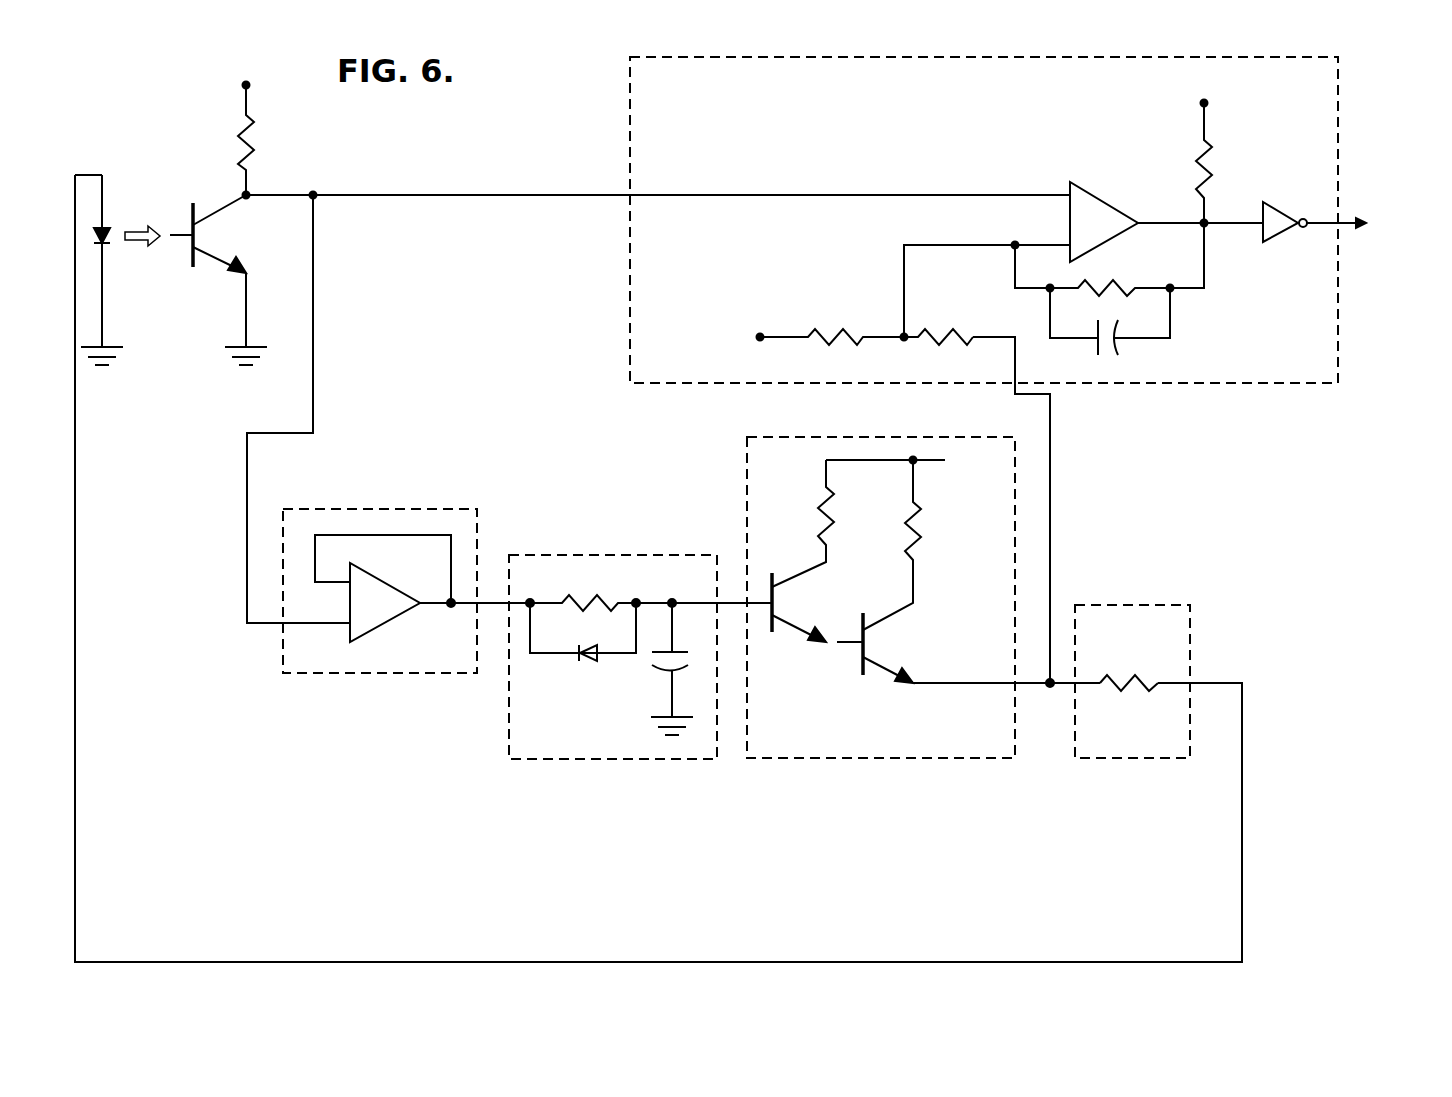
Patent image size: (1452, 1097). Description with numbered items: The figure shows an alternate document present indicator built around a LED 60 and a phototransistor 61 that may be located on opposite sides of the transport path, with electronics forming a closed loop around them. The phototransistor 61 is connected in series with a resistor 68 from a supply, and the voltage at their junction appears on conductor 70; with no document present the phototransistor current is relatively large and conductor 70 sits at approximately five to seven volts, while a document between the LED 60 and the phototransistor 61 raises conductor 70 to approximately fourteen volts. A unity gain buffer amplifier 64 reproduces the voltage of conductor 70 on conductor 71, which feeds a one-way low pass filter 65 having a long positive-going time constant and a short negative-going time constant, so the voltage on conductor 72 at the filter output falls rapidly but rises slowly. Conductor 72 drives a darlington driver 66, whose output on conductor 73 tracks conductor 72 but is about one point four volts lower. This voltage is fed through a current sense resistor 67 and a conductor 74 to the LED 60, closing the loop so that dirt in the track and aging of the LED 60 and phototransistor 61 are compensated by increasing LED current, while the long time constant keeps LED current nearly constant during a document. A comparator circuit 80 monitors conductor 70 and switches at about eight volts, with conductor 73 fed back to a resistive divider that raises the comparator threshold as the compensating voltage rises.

The LED 60 is at (105, 226).
The phototransistor 61 is at (190, 215).
The unity gain buffer amplifier 64 is at (328, 510).
The one-way low pass filter 65 is at (600, 555).
The darlington driver 66 is at (893, 597).
The current sense resistor 67 is at (1108, 603).
The resistor 68 is at (252, 168).
The conductor 70 is at (316, 291).
The conductor 71 is at (495, 600).
The conductor 72 is at (730, 605).
The conductor 73 is at (1052, 506).
The conductor 74 is at (75, 177).
The comparator circuit 80 is at (628, 137).